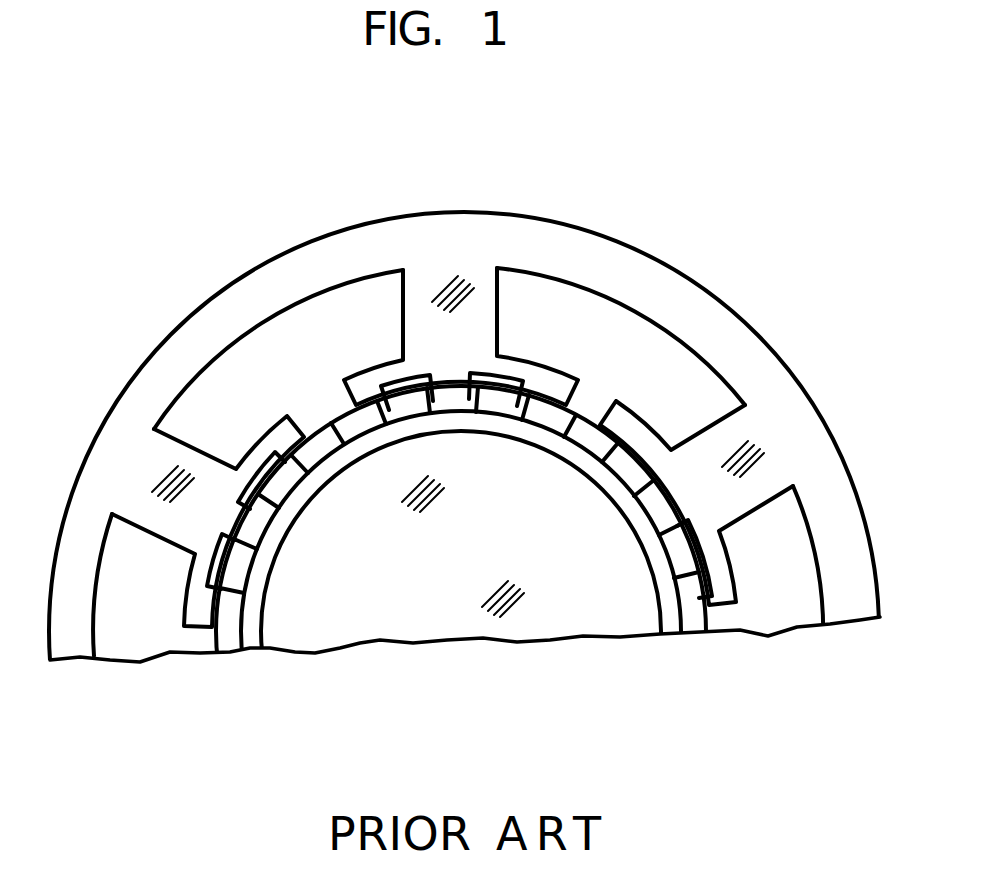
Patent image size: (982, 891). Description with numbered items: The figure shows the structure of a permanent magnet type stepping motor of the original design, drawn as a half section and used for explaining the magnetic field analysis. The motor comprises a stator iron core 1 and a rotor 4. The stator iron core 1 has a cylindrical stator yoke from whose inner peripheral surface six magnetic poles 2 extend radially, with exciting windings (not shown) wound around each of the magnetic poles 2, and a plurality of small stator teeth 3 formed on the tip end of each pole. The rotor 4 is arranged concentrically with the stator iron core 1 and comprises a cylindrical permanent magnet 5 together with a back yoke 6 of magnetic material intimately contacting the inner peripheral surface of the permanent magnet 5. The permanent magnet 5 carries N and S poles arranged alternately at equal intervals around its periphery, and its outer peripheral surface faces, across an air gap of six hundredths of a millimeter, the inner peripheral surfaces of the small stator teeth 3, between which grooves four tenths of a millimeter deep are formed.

The stator iron core 1 is at (155, 380).
The magnetic poles 2 is at (718, 413).
The small stator teeth 3 is at (310, 455).
The rotor 4 is at (244, 650).
The permanent magnet 5 is at (682, 577).
The back yoke 6 is at (258, 566).